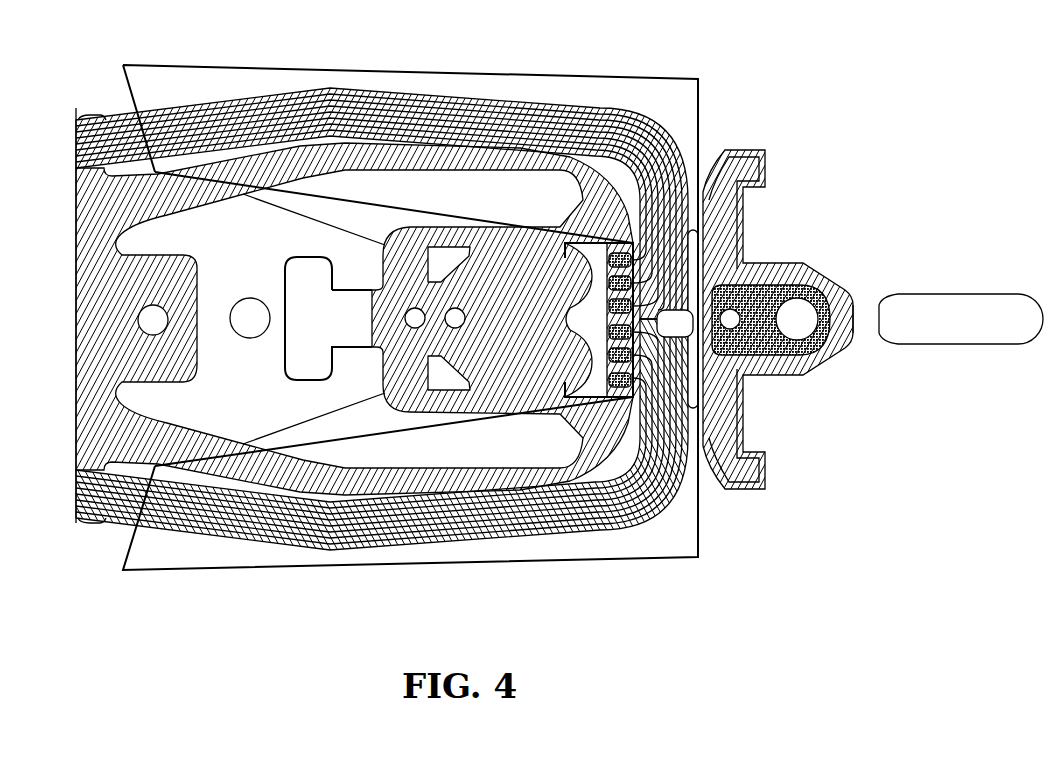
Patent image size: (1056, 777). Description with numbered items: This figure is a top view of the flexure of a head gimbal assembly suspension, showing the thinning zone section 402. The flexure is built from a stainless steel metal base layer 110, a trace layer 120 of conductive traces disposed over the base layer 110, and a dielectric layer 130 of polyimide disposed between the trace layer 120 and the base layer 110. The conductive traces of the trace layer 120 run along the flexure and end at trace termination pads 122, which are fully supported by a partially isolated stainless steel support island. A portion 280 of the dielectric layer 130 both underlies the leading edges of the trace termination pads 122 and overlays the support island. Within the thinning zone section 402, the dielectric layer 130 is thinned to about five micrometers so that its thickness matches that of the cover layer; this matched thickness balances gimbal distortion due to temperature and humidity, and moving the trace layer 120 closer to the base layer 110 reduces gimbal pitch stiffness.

The thinning zone section 402 is at (472, 76).
The dielectric layer 130 is at (604, 108).
The metal base layer 110 is at (480, 232).
The trace layer 120 is at (662, 478).
The trace termination pads 122 is at (617, 402).
The portion of the dielectric layer 280 is at (572, 388).